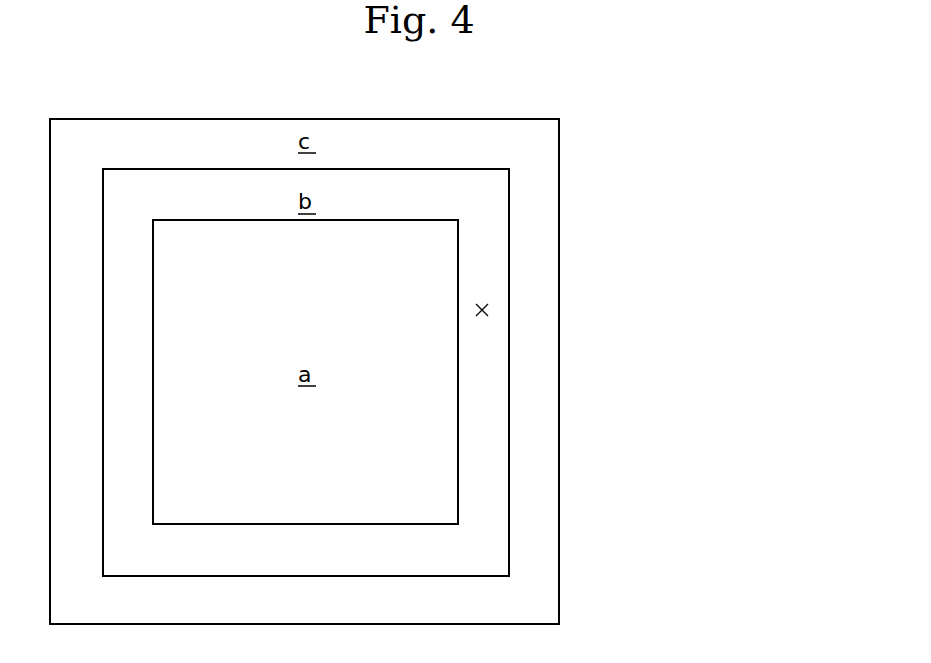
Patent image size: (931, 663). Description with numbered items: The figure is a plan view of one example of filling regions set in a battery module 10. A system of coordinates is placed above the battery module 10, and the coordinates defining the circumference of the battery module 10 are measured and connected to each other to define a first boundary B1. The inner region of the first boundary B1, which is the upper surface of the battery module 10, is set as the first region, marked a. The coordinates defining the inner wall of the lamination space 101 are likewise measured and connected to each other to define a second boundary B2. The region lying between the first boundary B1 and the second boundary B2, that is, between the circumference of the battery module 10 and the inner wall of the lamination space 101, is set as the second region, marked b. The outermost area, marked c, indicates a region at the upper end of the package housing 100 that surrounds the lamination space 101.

The battery module 10 is at (419, 425).
The substrate 100 is at (543, 511).
The lamination space 101 is at (486, 310).
The first boundary B1 is at (469, 352).
The second boundary B2 is at (520, 246).